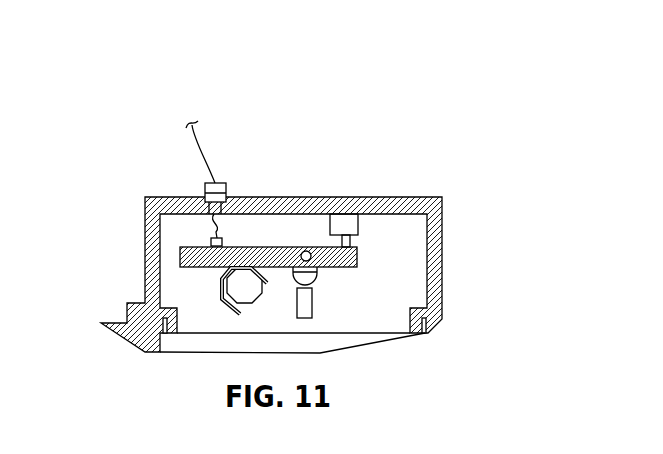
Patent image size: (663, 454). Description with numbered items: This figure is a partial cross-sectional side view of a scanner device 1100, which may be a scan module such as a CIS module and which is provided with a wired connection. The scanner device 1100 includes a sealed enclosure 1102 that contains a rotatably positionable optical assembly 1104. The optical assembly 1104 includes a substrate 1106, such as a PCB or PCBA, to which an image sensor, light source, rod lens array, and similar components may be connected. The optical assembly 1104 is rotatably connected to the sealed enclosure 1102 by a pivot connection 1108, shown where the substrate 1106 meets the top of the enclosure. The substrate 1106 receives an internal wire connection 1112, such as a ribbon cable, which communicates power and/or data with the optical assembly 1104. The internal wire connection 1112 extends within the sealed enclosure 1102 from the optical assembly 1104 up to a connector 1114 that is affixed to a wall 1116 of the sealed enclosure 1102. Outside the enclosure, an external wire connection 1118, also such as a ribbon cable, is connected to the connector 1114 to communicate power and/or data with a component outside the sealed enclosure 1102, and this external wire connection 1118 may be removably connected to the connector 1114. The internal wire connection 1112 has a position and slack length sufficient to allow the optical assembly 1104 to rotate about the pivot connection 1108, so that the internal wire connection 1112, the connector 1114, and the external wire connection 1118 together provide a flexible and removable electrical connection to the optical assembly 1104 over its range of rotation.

The scanner device 1100 is at (210, 238).
The sealed enclosure 1102 is at (120, 231).
The optical assembly 1104 is at (350, 276).
The substrate 1106 is at (185, 253).
The pivot connection 1108 is at (307, 250).
The internal wire connection 1112 is at (212, 218).
The connector 1114 is at (200, 187).
The wall 1116 is at (256, 197).
The external wire connection 1118 is at (186, 128).